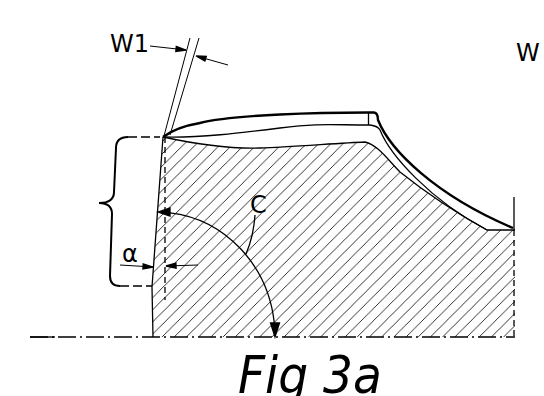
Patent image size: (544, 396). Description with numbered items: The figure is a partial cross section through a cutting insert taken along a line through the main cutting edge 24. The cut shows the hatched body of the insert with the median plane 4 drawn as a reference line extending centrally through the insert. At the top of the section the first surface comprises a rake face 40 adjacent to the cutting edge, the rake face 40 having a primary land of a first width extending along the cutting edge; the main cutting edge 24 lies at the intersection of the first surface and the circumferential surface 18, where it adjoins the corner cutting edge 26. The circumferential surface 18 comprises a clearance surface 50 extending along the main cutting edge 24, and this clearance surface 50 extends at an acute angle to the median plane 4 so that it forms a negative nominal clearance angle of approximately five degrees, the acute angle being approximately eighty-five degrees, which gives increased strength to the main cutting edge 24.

The median plane 4 is at (41, 317).
The circumferential surface 18 is at (130, 308).
The main cutting edge 24 is at (154, 125).
The corner cutting edge 26 is at (208, 107).
The rake face 40 is at (267, 116).
The clearance surface 50 is at (110, 211).